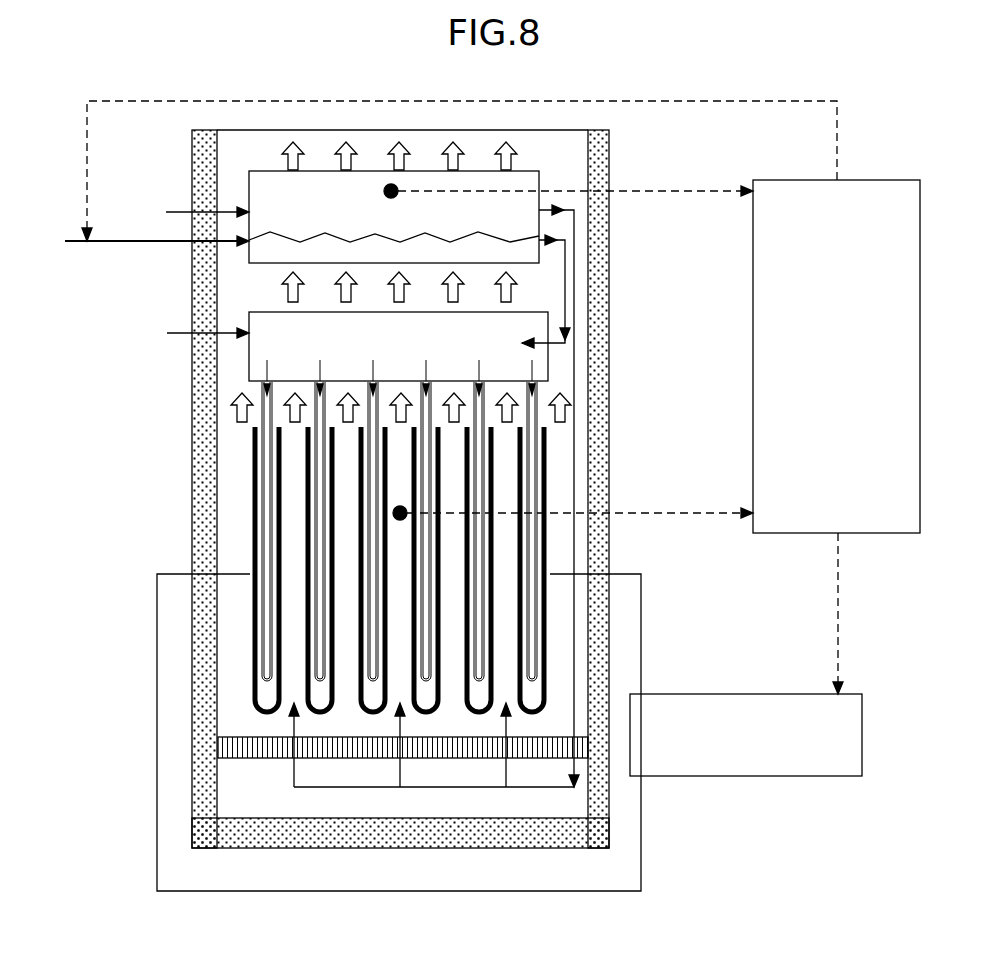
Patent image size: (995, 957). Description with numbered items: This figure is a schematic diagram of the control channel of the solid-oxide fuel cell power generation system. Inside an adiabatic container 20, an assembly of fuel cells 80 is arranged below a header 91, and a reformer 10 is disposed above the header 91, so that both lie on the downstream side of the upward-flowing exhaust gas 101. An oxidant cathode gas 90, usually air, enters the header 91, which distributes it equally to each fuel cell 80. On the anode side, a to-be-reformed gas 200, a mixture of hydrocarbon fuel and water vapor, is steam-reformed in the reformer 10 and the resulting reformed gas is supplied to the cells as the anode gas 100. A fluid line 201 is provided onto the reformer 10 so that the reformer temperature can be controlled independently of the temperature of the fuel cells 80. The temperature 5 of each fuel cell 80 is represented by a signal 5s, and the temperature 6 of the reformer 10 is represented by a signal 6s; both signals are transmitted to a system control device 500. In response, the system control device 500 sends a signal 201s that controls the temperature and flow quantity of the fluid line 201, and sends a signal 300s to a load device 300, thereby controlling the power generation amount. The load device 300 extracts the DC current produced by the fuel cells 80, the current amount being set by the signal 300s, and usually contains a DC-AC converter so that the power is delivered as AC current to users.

The temperature of each fuel cell 5 is at (400, 513).
The signal 5s is at (700, 513).
The temperature of the reformer 6 is at (391, 191).
The signal 6s is at (700, 190).
The reformer 10 is at (540, 180).
The adiabatic container 20 is at (192, 450).
The fuel cell 80 is at (253, 510).
The cathode gas 90 is at (177, 328).
The header 91 is at (249, 363).
The anode gas 100 is at (588, 358).
The exhaust gas 101 is at (512, 288).
The to-be-reformed gas 200 is at (178, 210).
The fluid line 201 is at (140, 242).
The signal 201s is at (838, 122).
The load device 300 is at (730, 694).
The signal 300s is at (838, 617).
The system control device 500 is at (878, 180).